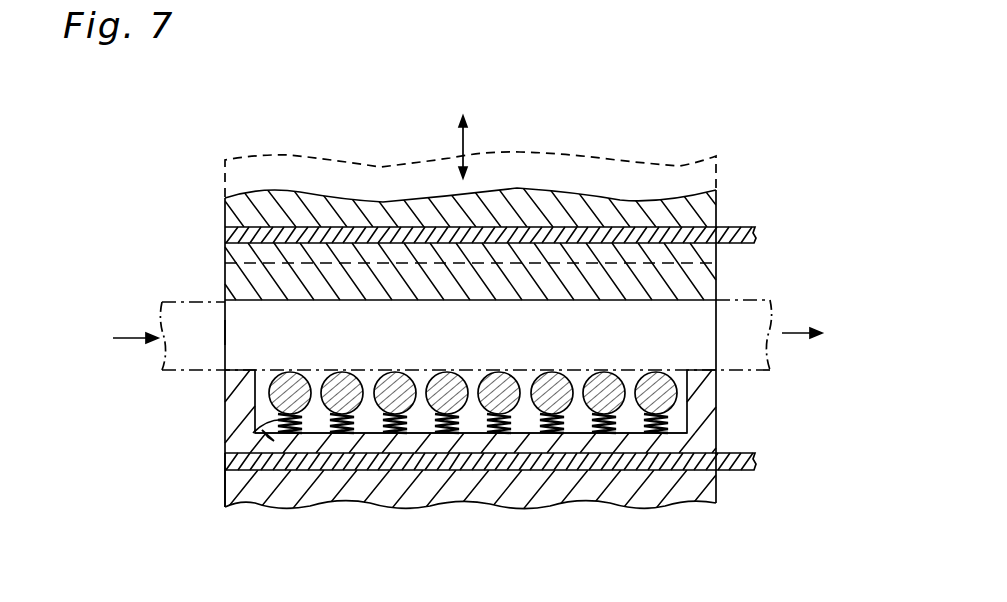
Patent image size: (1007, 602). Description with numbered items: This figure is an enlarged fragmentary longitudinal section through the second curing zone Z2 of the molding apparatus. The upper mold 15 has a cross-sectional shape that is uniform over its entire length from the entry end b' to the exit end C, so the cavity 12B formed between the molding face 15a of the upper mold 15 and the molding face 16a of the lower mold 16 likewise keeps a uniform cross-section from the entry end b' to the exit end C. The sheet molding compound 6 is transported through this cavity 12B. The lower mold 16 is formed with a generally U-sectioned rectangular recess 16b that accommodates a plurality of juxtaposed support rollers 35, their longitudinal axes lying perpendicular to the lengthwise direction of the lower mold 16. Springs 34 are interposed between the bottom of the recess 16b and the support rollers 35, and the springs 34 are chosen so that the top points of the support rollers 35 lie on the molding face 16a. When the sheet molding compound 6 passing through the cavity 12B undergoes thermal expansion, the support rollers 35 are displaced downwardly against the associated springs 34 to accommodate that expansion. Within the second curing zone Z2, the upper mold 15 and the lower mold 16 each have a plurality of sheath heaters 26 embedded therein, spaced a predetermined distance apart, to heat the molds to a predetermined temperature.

The upper mold 15 is at (716, 190).
The molding face of the upper mold 15a is at (363, 290).
The sheath heater 26 is at (740, 227).
The cavity 12B is at (537, 335).
The lower mold 16 is at (490, 488).
The molding face of the lower mold 16a is at (473, 370).
The recess 16b is at (575, 435).
The spring 34 is at (225, 470).
The support roller 35 is at (270, 398).
The second curing zone Z2 is at (246, 165).
The exit end C is at (716, 331).
The sheet molding compound 6 is at (162, 322).
The entry end b' is at (195, 277).